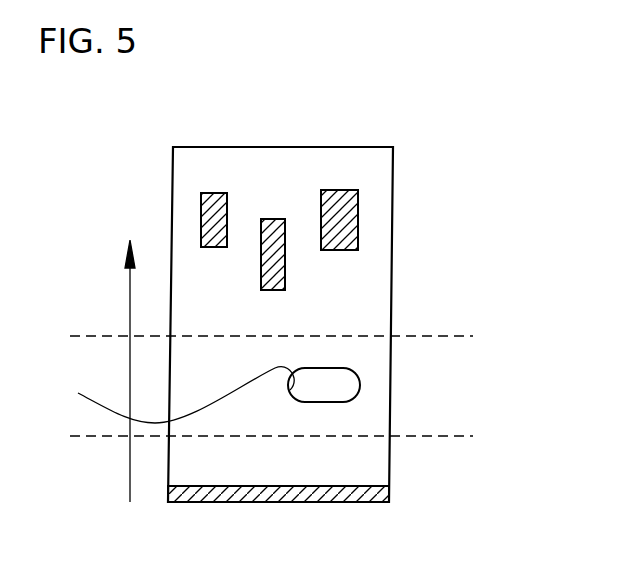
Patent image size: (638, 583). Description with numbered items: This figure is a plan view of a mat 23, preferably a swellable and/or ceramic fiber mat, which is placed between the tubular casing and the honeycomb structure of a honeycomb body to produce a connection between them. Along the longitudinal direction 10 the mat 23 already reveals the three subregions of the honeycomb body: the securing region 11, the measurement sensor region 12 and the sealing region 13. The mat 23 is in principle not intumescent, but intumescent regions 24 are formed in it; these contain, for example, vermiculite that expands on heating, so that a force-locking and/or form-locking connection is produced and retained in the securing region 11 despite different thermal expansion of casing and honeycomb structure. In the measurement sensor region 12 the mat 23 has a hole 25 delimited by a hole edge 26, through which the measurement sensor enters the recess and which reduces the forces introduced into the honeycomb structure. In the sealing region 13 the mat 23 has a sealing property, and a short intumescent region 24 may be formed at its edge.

The longitudinal direction 10 is at (130, 302).
The securing region 11 is at (410, 257).
The measurement sensor region 12 is at (408, 382).
The sealing region 13 is at (407, 463).
The mat 23 is at (393, 195).
The intumescent regions 24 is at (343, 190).
The hole 25 is at (347, 383).
The hole edge 26 is at (164, 395).